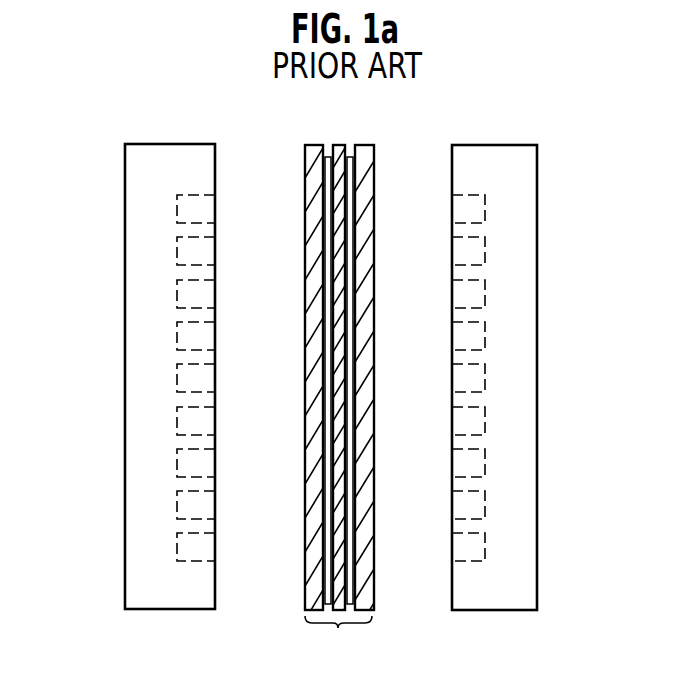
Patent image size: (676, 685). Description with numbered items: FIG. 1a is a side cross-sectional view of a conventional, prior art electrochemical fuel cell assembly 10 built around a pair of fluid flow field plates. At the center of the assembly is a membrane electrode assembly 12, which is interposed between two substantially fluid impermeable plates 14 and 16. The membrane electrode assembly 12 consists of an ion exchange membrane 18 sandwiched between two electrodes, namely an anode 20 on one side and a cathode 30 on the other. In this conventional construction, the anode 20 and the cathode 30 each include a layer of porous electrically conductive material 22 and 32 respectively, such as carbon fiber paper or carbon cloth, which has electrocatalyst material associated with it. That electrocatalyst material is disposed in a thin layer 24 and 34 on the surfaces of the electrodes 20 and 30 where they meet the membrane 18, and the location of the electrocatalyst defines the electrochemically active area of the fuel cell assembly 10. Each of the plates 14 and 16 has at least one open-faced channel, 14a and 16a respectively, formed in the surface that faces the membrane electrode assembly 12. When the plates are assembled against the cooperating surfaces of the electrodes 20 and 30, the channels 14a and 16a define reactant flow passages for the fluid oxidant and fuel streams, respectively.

The electrochemical fuel cell assembly 10 is at (496, 139).
The membrane electrode assembly 12 is at (338, 636).
The fluid impermeable plate 14 is at (139, 237).
The open-faced channel 14a is at (173, 377).
The fluid impermeable plate 16 is at (530, 243).
The open-faced channel 16a is at (488, 373).
The ion exchange membrane 18 is at (336, 145).
The anode 20 is at (365, 145).
The layer of porous electrically conductive material 22 is at (368, 565).
The electrocatalyst layer 24 is at (354, 188).
The cathode 30 is at (318, 145).
The layer of porous electrically conductive material 32 is at (310, 568).
The electrocatalyst layer 34 is at (308, 189).